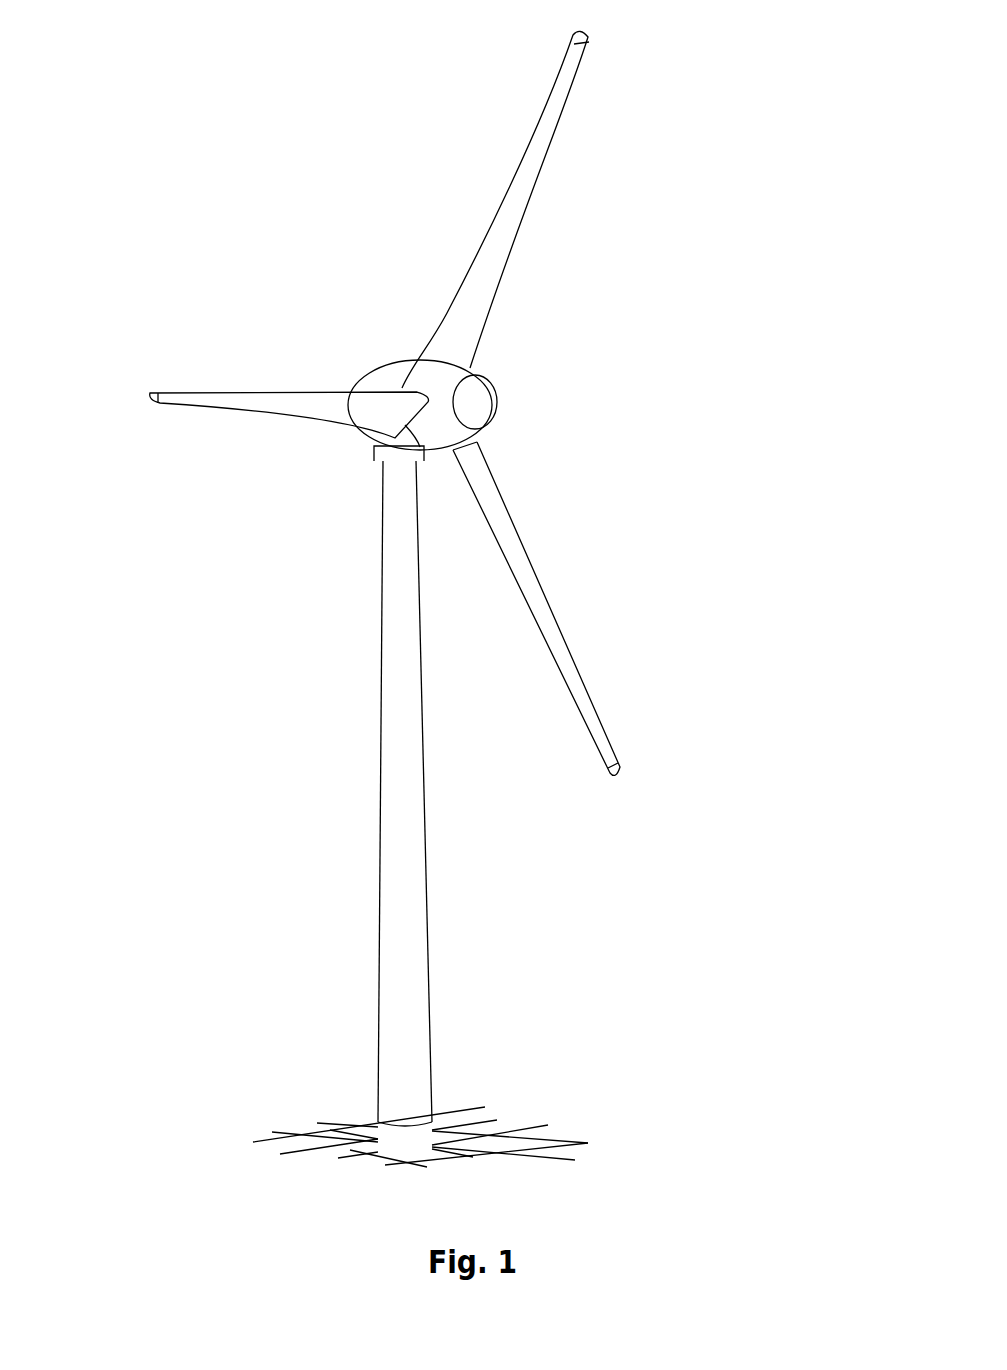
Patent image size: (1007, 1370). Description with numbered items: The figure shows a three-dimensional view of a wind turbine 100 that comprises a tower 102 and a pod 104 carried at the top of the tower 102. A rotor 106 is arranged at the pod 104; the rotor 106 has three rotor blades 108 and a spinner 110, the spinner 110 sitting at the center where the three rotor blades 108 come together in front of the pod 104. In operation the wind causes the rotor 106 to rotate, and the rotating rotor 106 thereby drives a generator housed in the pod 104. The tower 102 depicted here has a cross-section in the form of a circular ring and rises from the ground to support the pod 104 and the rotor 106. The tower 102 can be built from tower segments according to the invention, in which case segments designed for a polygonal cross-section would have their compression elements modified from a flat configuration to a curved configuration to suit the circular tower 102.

The wind turbine 100 is at (338, 520).
The tower 102 is at (410, 893).
The pod 104 is at (393, 378).
The rotor 106 is at (620, 287).
The rotor blades 108 is at (533, 160).
The spinner 110 is at (480, 400).